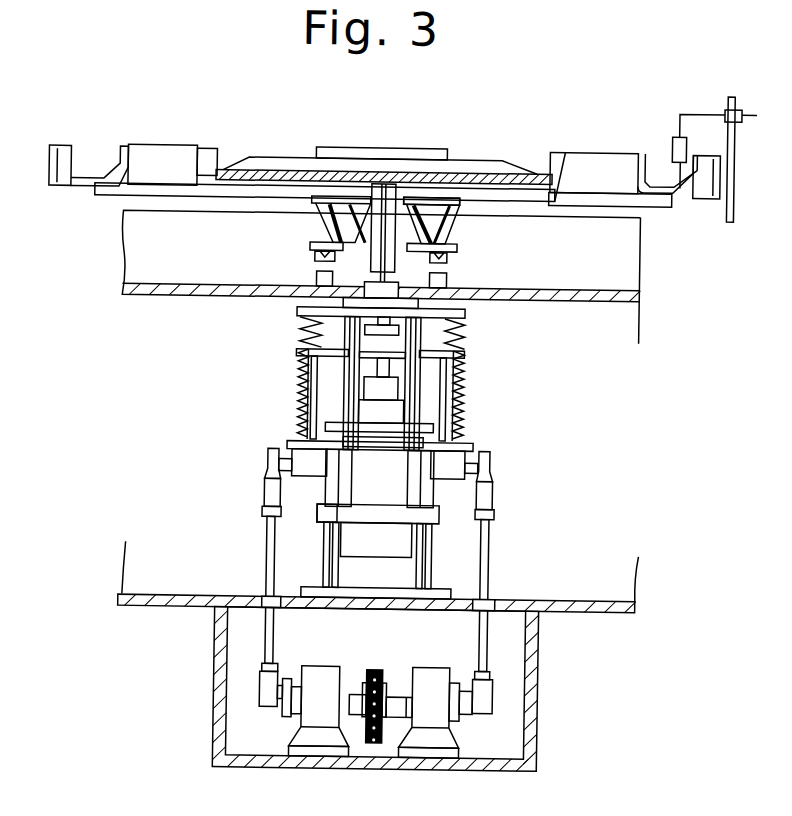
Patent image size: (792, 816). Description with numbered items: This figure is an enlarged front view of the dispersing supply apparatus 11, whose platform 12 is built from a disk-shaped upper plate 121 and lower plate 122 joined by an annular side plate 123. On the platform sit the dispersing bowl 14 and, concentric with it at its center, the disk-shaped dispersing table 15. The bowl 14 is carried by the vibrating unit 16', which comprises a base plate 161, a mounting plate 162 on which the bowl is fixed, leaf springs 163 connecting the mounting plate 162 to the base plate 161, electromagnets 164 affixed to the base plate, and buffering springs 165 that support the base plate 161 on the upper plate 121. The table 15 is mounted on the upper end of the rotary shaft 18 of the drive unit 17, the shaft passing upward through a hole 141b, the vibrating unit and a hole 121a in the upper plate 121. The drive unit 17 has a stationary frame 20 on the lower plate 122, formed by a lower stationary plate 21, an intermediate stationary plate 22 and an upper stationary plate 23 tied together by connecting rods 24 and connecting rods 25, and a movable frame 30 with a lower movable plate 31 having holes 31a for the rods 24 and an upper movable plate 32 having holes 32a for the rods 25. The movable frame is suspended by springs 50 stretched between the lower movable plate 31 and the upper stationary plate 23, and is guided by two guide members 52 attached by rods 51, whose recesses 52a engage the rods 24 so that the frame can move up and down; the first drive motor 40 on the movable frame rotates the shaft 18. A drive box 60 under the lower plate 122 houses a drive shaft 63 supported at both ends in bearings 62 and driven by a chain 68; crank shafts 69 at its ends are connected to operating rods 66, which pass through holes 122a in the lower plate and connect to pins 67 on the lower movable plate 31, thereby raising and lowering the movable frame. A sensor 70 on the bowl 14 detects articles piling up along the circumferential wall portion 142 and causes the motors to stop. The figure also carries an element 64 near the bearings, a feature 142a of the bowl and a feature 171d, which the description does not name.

The dispersing supply apparatus 11 is at (650, 146).
The platform 12 is at (648, 571).
The dispersing bowl 14 is at (175, 145).
The dispersing table 15 is at (482, 164).
The vibrating unit 16' is at (331, 217).
The drive unit 17 is at (534, 408).
The rotary shaft 18 is at (385, 275).
The stationary frame 20 is at (395, 440).
The lower stationary plate 21 is at (442, 592).
The intermediate stationary plate 22 is at (390, 427).
The upper stationary plate 23 is at (458, 307).
The connecting rods 24 is at (428, 549).
The connecting rods 25 is at (406, 375).
The movable frame 30 is at (478, 444).
The lower movable plate 31 is at (297, 443).
The holes 31a is at (341, 464).
The upper movable plate 32 is at (332, 348).
The holes 32a is at (344, 371).
The first drive motor 40 is at (378, 553).
The springs 50 is at (295, 329).
The rods 51 is at (405, 470).
The guide members 52 is at (439, 517).
The recesses 52a is at (341, 518).
The drive box 60 is at (535, 683).
The bearings 62 is at (321, 678).
The drive shaft 63 is at (397, 707).
The disc 64 is at (466, 689).
The operating rods 66 is at (270, 662).
The pins 67 is at (270, 454).
The chain 68 is at (371, 675).
The crank shafts 69 is at (264, 692).
The sensor 70 is at (676, 156).
The upper plate 121 is at (589, 287).
The hole 121a is at (339, 304).
The lower plate 122 is at (585, 597).
The holes 122a is at (265, 594).
The annular side plate 123 is at (628, 316).
The hole 141b is at (335, 149).
The circumferential wall portion 142 is at (595, 160).
The channel bracket 142a is at (85, 172).
The base plate 161 is at (440, 247).
The mounting plate 162 is at (470, 205).
The leaf springs 163 is at (440, 222).
The electromagnets 164 is at (314, 231).
The buffering springs 165 is at (310, 266).
The rack 171d is at (296, 393).